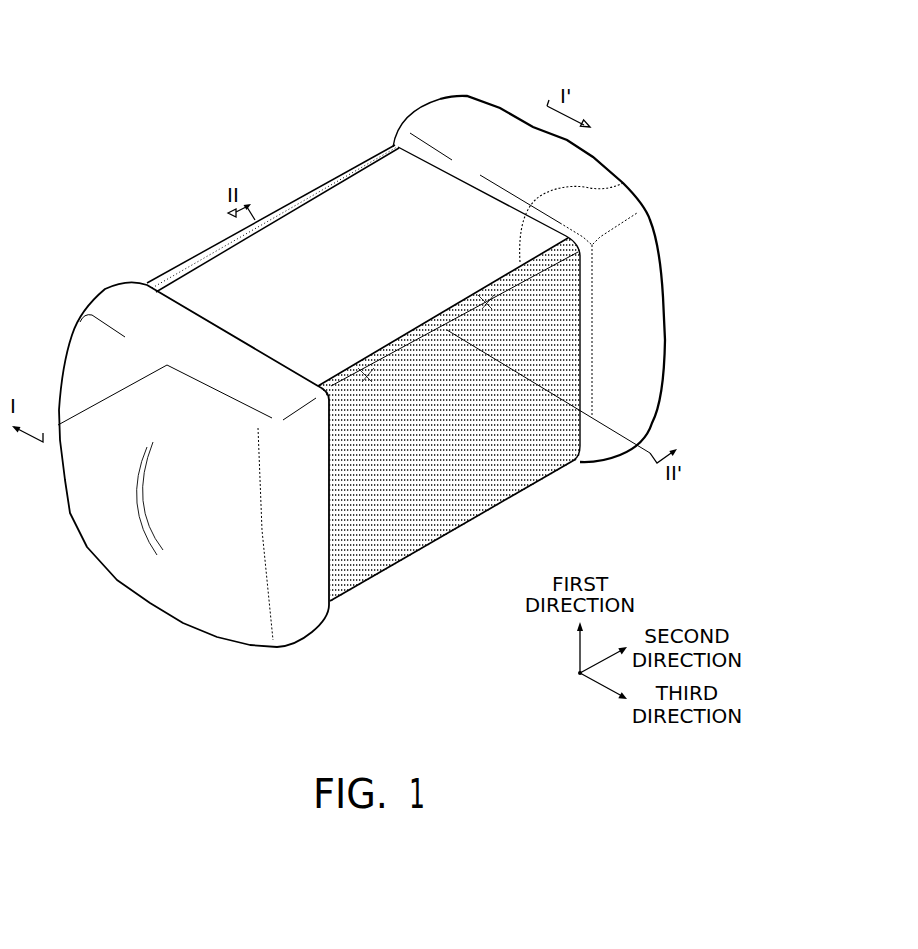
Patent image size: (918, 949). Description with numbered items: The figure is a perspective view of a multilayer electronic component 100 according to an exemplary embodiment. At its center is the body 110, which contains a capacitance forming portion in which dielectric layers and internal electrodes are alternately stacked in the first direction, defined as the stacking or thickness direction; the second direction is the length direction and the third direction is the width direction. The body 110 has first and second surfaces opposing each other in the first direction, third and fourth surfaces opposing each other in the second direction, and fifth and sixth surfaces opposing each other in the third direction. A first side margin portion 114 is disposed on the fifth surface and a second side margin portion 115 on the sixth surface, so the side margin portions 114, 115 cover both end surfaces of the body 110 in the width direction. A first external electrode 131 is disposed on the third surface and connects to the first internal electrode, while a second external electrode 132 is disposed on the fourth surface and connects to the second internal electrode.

The multilayer electronic component 100 is at (119, 38).
The body 110 is at (337, 222).
The first side margin portion 114 is at (290, 214).
The second side margin portion 115 is at (623, 183).
The first external electrode 131 is at (115, 286).
The second external electrode 132 is at (437, 102).